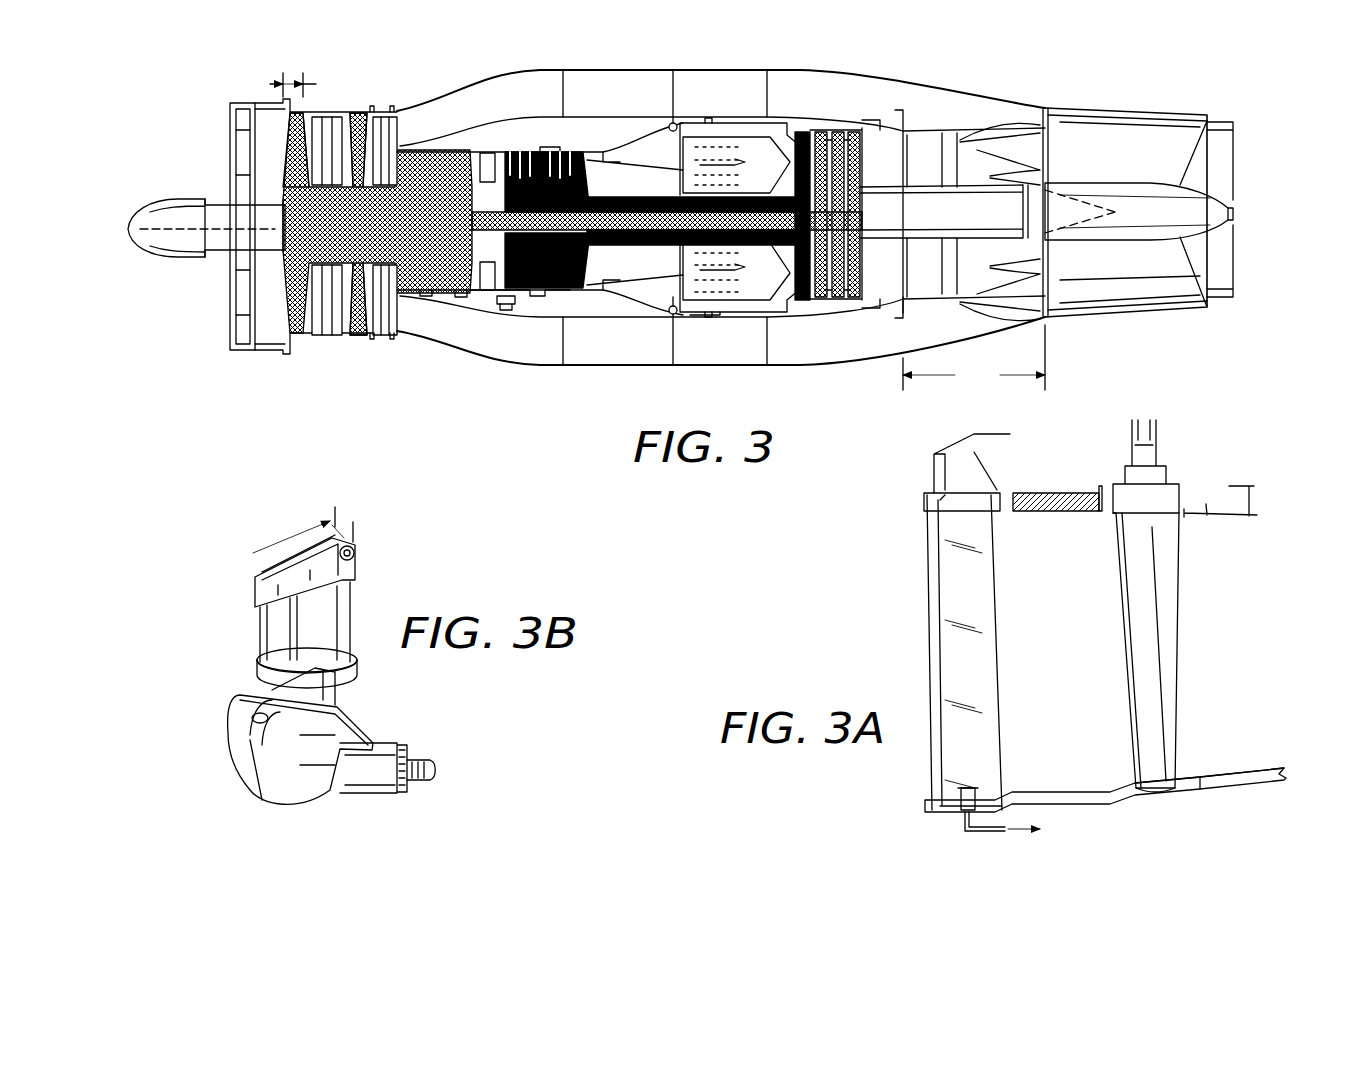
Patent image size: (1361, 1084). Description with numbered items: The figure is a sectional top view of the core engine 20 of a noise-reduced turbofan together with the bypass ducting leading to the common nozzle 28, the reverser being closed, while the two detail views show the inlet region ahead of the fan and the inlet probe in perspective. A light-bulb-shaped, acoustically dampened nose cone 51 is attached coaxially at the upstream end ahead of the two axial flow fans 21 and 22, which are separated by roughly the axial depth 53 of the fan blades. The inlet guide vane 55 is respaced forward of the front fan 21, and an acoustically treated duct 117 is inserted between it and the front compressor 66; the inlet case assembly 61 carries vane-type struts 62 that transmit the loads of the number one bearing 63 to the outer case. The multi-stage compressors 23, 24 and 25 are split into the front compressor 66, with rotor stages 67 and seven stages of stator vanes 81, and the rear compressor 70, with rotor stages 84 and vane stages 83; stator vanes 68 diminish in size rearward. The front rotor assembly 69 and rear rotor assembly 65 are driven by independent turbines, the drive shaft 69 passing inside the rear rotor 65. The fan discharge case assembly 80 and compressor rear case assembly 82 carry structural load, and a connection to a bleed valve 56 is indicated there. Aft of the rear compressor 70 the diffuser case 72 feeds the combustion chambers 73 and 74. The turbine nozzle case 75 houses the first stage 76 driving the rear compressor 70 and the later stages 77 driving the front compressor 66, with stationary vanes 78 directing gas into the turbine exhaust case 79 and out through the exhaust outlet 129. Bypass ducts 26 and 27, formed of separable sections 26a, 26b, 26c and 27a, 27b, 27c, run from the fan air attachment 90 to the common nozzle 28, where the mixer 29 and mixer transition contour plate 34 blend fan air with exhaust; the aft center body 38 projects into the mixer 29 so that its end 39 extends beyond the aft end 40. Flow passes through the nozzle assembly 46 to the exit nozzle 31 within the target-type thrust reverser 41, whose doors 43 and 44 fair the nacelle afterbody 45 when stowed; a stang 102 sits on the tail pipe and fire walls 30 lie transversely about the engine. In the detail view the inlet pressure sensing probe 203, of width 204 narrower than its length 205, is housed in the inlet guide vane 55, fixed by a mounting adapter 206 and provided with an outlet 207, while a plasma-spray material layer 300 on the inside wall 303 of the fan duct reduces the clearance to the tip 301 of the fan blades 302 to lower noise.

In FIG. 3, the core engine 20 is at (510, 139).
In FIG. 3, the front axial flow fan 21 is at (297, 336).
In FIG. 3A, the front axial flow fan 21 is at (1126, 660).
In FIG. 3, the second axial flow fan 22 is at (352, 338).
In FIG. 3, the multi-stage compressor 23 is at (460, 296).
In FIG. 3, the multi-stage compressor 24 is at (553, 285).
In FIG. 3, the multi-stage compressor 25 is at (820, 304).
In FIG. 3, the bypass duct 26 is at (609, 64).
In FIG. 3, the bypass duct front section 26a is at (505, 105).
In FIG. 3, the bypass duct middle section 26b is at (606, 102).
In FIG. 3, the bypass duct rear section 26c is at (712, 99).
In FIG. 3, the bypass duct 27 is at (616, 371).
In FIG. 3, the bypass duct front section 27a is at (510, 359).
In FIG. 3, the bypass duct middle section 27b is at (614, 357).
In FIG. 3, the bypass duct rear section 27c is at (730, 352).
In FIG. 3, the common nozzle 28 is at (903, 375).
In FIG. 3, the mixer 29 is at (993, 301).
In FIG. 3, the fire wall 30 is at (1210, 156).
In FIG. 3, the exit nozzle 31 is at (1233, 262).
In FIG. 3, the mixer transition contour plate 34 is at (950, 140).
In FIG. 3, the aft center body 38 is at (950, 222).
In FIG. 3, the aft center body end 39 is at (1113, 210).
In FIG. 3, the aft end of mixer 40 is at (1047, 150).
In FIG. 3, the target-type thrust reverser 41 is at (1186, 315).
In FIG. 3, the reverser door 43 is at (1155, 112).
In FIG. 3, the reverser door 44 is at (1137, 316).
In FIG. 3, the nacelle afterbody 45 is at (1188, 88).
In FIG. 3, the nozzle assembly 46 is at (1074, 295).
In FIG. 3, the nose cone 51 is at (168, 200).
In FIG. 3, the axial depth of fan blades 53 is at (292, 72).
In FIG. 3, the inlet guide vane 55 is at (236, 340).
In FIG. 3A, the inlet guide vane 55 is at (938, 663).
In FIG. 3, the bleed valve 56 is at (506, 314).
In FIG. 3A, the bleed valve 56 is at (1184, 872).
In FIG. 3, the inlet case assembly 61 is at (285, 351).
In FIG. 3, the vane-type strut 62 is at (247, 153).
In FIG. 3, the No. 1 bearing 63 is at (283, 252).
In FIG. 3, the rear compressor rotor assembly 65 is at (637, 243).
In FIG. 3, the front compressor 66 is at (287, 141).
In FIG. 3, the rotor stage 67 is at (356, 110).
In FIG. 3, the stator vane 68 is at (333, 337).
In FIG. 3, the front compressor rotor assembly 69 is at (602, 241).
In FIG. 3, the rear compressor 70 is at (558, 150).
In FIG. 3, the diffuser case 72 is at (658, 133).
In FIG. 3, the combustion chamber 73 is at (738, 294).
In FIG. 3, the combustion chamber 74 is at (748, 167).
In FIG. 3, the turbine nozzle case 75 is at (800, 130).
In FIG. 3, the first stage turbine 76 is at (805, 303).
In FIG. 3, the second, third and fourth turbine stages 77 is at (858, 118).
In FIG. 3, the stationary vane 78 is at (844, 300).
In FIG. 3, the turbine exhaust case 79 is at (893, 126).
In FIG. 3, the fan discharge case assembly 80 is at (376, 338).
In FIG. 3A, the fan discharge case assembly 80 is at (1213, 795).
In FIG. 3, the stator vane stage 81 is at (426, 300).
In FIG. 3, the compressor rear case assembly 82 is at (527, 293).
In FIG. 3, the vane stage 83 is at (522, 152).
In FIG. 3, the rotor stage 84 is at (566, 152).
In FIG. 3, the engine fan air attachment 90 is at (378, 116).
In FIG. 3, the stang 102 is at (1225, 210).
In FIG. 3, the acoustically-treated duct 117 is at (262, 101).
In FIG. 3, the exhaust outlet 129 is at (918, 150).
In FIG. 3A, the inlet pressure sensing probe 203 is at (957, 791).
In FIG. 3B, the probe width 204 is at (348, 520).
In FIG. 3B, the probe length 205 is at (300, 537).
In FIG. 3B, the mounting adapter 206 is at (245, 786).
In FIG. 3B, the probe outlet 207 is at (428, 760).
In FIG. 3A, the material layer 300 is at (1177, 789).
In FIG. 3A, the blade tip 301 is at (1141, 785).
In FIG. 3A, the fan blade 302 is at (1182, 690).
In FIG. 3A, the duct inside wall 303 is at (1258, 777).